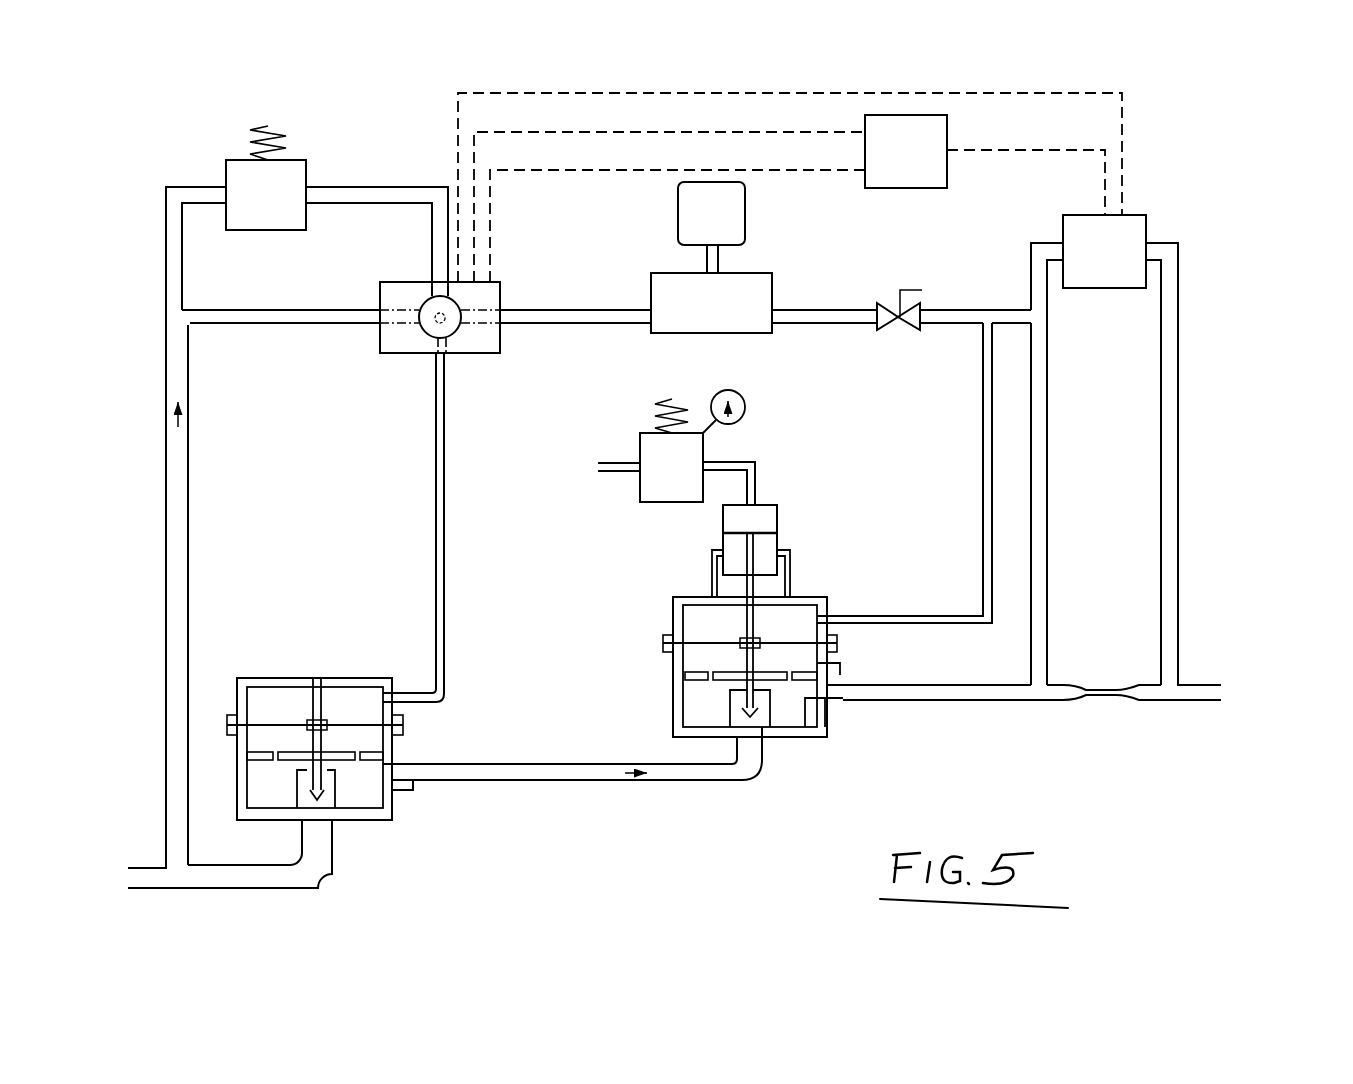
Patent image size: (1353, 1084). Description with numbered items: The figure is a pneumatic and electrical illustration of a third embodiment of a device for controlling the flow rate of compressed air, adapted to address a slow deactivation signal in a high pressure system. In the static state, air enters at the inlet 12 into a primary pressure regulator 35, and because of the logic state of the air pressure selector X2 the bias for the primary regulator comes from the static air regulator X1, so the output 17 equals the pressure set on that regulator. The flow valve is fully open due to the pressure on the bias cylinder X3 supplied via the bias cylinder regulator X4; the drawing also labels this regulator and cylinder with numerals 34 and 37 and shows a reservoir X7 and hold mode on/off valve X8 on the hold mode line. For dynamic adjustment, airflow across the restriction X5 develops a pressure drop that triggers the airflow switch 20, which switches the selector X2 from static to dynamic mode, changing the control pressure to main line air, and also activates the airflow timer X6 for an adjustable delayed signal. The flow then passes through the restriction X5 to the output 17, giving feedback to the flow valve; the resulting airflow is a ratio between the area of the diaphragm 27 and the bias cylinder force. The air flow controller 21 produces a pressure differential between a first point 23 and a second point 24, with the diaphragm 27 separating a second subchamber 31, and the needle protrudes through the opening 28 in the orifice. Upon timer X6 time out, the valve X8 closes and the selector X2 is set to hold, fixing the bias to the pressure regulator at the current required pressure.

The air inlet 12 is at (150, 877).
The static air regulator X1 is at (226, 159).
The air pressure selector X2 is at (497, 277).
The bias cylinder X3 is at (778, 586).
The bias cylinder regulator X4 is at (685, 459).
The restriction X5 is at (1116, 684).
The airflow timer X6 is at (905, 191).
The reservoir bottle X7 is at (716, 217).
The hold mode on/off valve X8 is at (774, 292).
The airflow switch 20 is at (1150, 214).
The output 17 is at (1083, 695).
The air flow controller 21 is at (672, 690).
The first point 23 is at (706, 669).
The second point 24 is at (687, 556).
The diaphragm 27 is at (704, 642).
The opening 28 is at (761, 731).
The second subchamber 31 is at (788, 657).
The bias piston 34 is at (723, 533).
The primary pressure regulator 35 is at (394, 821).
The bias regulator body 37 is at (670, 503).